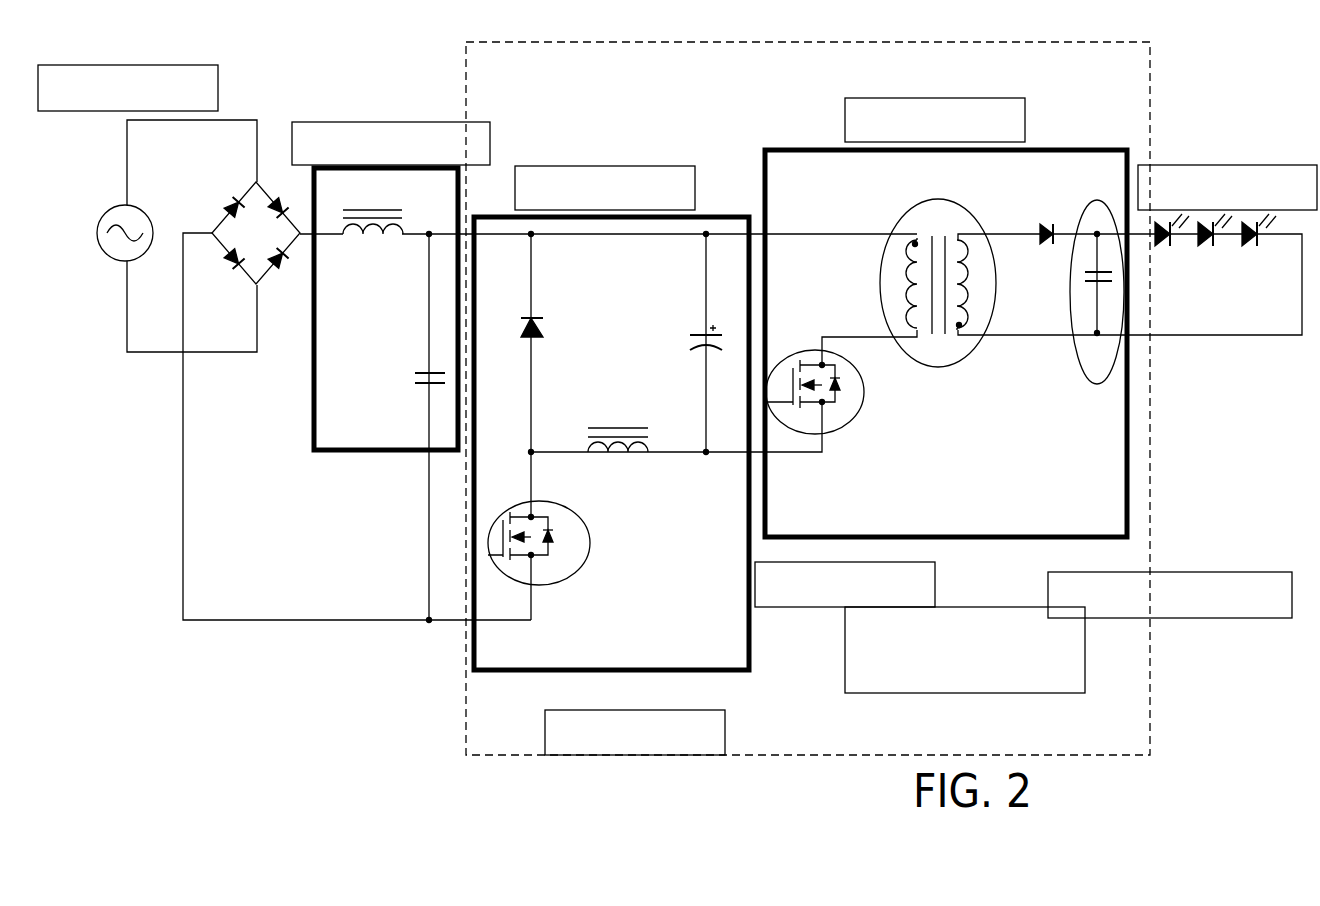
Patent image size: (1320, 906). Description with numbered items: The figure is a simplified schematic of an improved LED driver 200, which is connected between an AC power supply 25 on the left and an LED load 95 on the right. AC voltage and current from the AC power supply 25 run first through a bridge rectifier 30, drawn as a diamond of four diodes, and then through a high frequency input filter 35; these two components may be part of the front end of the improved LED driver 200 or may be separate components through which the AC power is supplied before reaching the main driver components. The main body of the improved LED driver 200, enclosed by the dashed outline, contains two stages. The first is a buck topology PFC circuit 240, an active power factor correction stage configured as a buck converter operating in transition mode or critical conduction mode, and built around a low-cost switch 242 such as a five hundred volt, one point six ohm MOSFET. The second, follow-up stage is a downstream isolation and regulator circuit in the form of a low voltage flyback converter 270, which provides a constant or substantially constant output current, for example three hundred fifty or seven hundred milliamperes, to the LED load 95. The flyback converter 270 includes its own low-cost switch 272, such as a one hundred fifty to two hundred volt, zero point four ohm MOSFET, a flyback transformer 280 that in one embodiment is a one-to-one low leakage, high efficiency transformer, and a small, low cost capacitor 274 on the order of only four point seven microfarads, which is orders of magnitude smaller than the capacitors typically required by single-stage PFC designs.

The AC power supply 25 is at (162, 236).
The bridge rectifier 30 is at (268, 190).
The high frequency input filter 35 is at (380, 436).
The improved LED driver 200 is at (1127, 97).
The buck topology PFC circuit 240 is at (713, 633).
The switch 242 is at (560, 587).
The low voltage flyback converter 270 is at (1078, 503).
The switch 272 is at (850, 423).
The capacitor 274 is at (1112, 387).
The flyback transformer 280 is at (937, 367).
The LED load 95 is at (1207, 210).